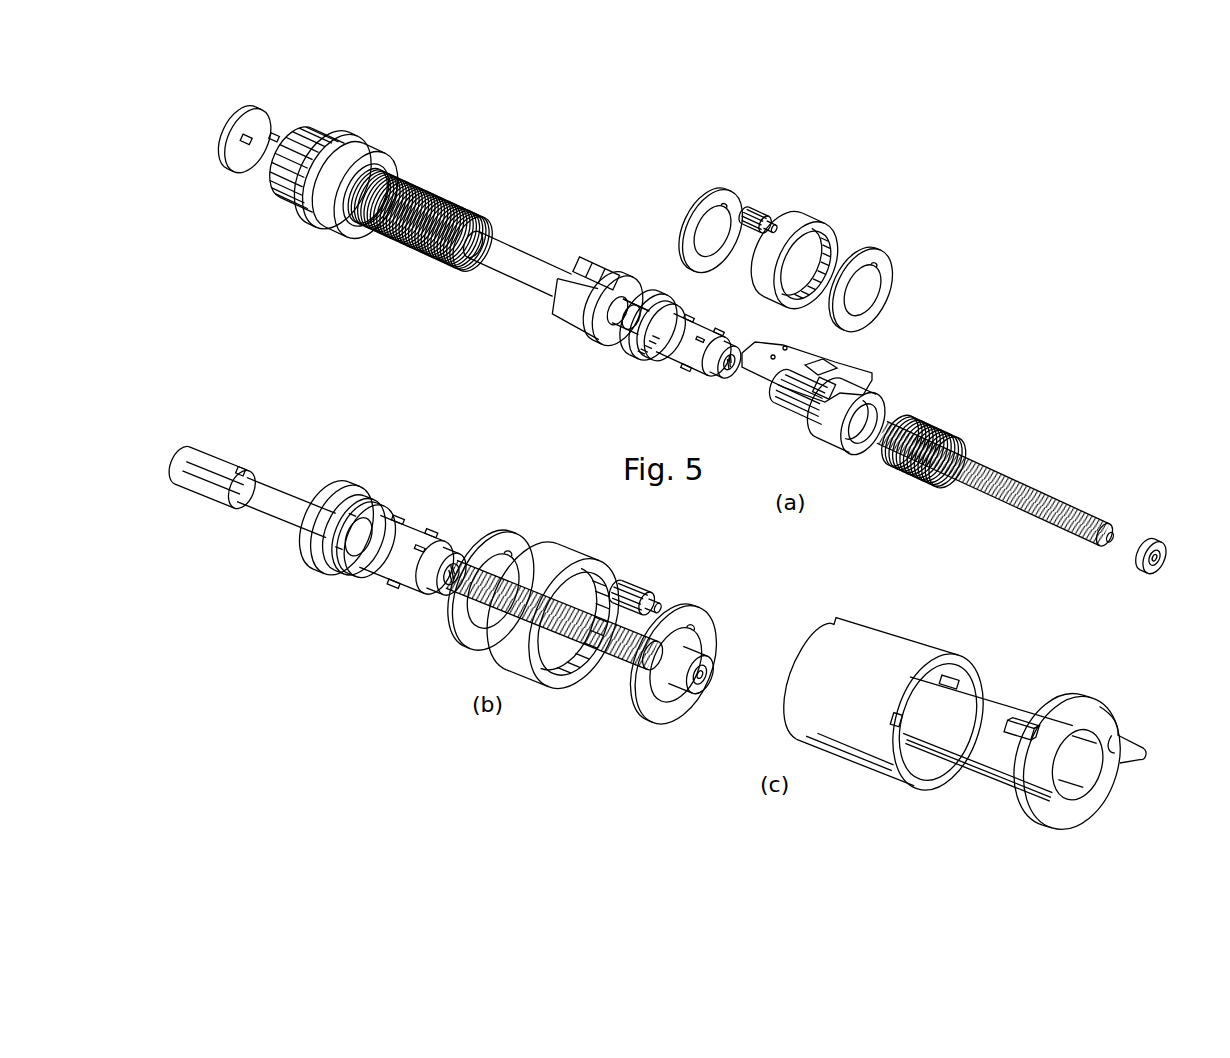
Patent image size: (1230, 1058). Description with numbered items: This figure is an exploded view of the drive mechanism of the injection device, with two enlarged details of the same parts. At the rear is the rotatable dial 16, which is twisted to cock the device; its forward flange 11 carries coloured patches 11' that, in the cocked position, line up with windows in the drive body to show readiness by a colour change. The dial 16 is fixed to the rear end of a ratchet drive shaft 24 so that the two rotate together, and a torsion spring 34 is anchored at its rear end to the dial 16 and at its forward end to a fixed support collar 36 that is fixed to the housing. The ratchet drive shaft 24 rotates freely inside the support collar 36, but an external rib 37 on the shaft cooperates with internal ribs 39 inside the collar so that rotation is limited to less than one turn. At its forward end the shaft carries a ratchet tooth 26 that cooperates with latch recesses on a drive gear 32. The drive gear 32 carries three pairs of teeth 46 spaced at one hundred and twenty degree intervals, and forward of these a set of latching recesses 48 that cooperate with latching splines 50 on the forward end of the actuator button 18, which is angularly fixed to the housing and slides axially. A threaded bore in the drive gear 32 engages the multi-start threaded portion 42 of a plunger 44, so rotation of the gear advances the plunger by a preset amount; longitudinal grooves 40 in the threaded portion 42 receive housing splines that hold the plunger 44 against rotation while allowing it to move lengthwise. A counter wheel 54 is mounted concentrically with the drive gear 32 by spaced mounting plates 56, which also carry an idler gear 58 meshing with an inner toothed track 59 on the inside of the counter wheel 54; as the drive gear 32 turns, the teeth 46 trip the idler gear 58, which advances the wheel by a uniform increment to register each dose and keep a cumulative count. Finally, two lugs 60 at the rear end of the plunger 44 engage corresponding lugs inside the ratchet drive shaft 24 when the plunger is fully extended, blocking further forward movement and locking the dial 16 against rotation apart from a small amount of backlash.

The forward flange 11 is at (354, 214).
The coloured patches 11' is at (344, 171).
The rotatable dial 16 is at (290, 198).
The actuator button 18 is at (860, 367).
The ratchet drive shaft 24 is at (497, 268).
The ratchet tooth 26 is at (624, 292).
The drive gear 32 is at (682, 360).
The torsion spring 34 is at (390, 236).
The fixed support collar 36 is at (574, 318).
The external rib 37 is at (1020, 722).
The internal ribs 39 is at (963, 673).
The longitudinal grooves 40 is at (1017, 482).
The threaded portion 42 is at (977, 492).
The plunger 44 is at (895, 400).
The pairs of teeth 46 is at (668, 300).
The latching recesses 48 is at (693, 362).
The latching splines 50 is at (852, 458).
The counter wheel 54 is at (822, 225).
The mounting plates 56 is at (741, 187).
The idler gear 58 is at (770, 206).
The inner toothed track 59 is at (838, 258).
The lugs 60 is at (246, 492).